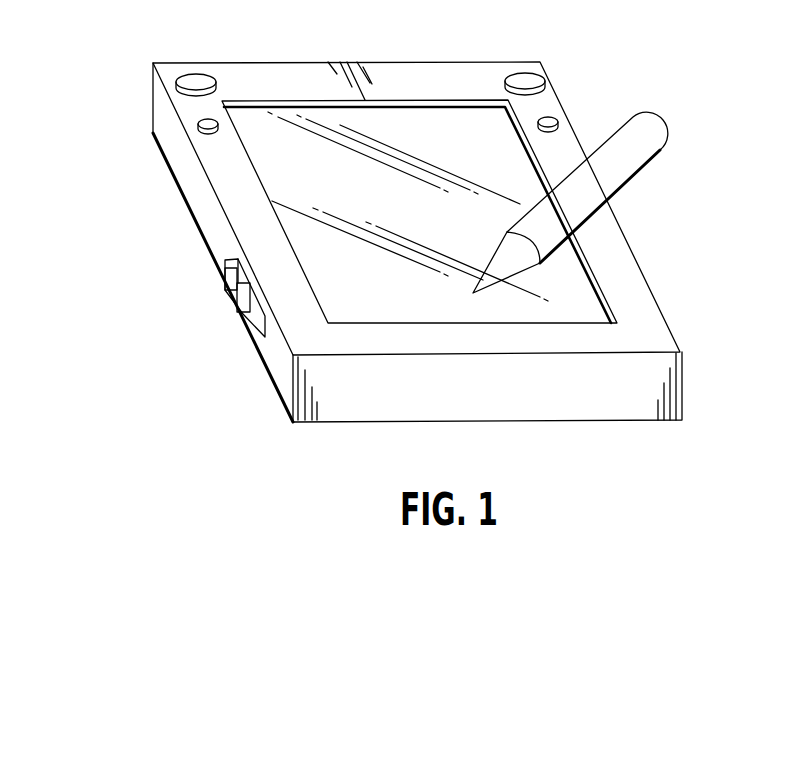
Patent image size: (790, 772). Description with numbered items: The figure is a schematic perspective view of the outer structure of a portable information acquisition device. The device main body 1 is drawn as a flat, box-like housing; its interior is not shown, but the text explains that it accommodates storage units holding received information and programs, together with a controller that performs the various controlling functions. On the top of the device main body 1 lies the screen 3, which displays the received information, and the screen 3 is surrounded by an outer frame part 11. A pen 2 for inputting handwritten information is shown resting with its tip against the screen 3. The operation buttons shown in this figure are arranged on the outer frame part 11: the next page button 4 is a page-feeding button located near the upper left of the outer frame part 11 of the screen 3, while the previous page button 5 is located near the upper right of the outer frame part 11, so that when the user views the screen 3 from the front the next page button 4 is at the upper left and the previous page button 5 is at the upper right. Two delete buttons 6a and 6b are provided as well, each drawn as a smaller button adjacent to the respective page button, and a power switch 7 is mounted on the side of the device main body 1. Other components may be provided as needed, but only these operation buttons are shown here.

The device main body 1 is at (92, 242).
The pen 2 is at (652, 139).
The screen 3 is at (448, 135).
The next page button 4 is at (192, 78).
The previous page button 5 is at (525, 77).
The delete button 6a is at (198, 128).
The delete button 6b is at (552, 118).
The power switch 7 is at (228, 297).
The outer frame part 11 is at (288, 62).